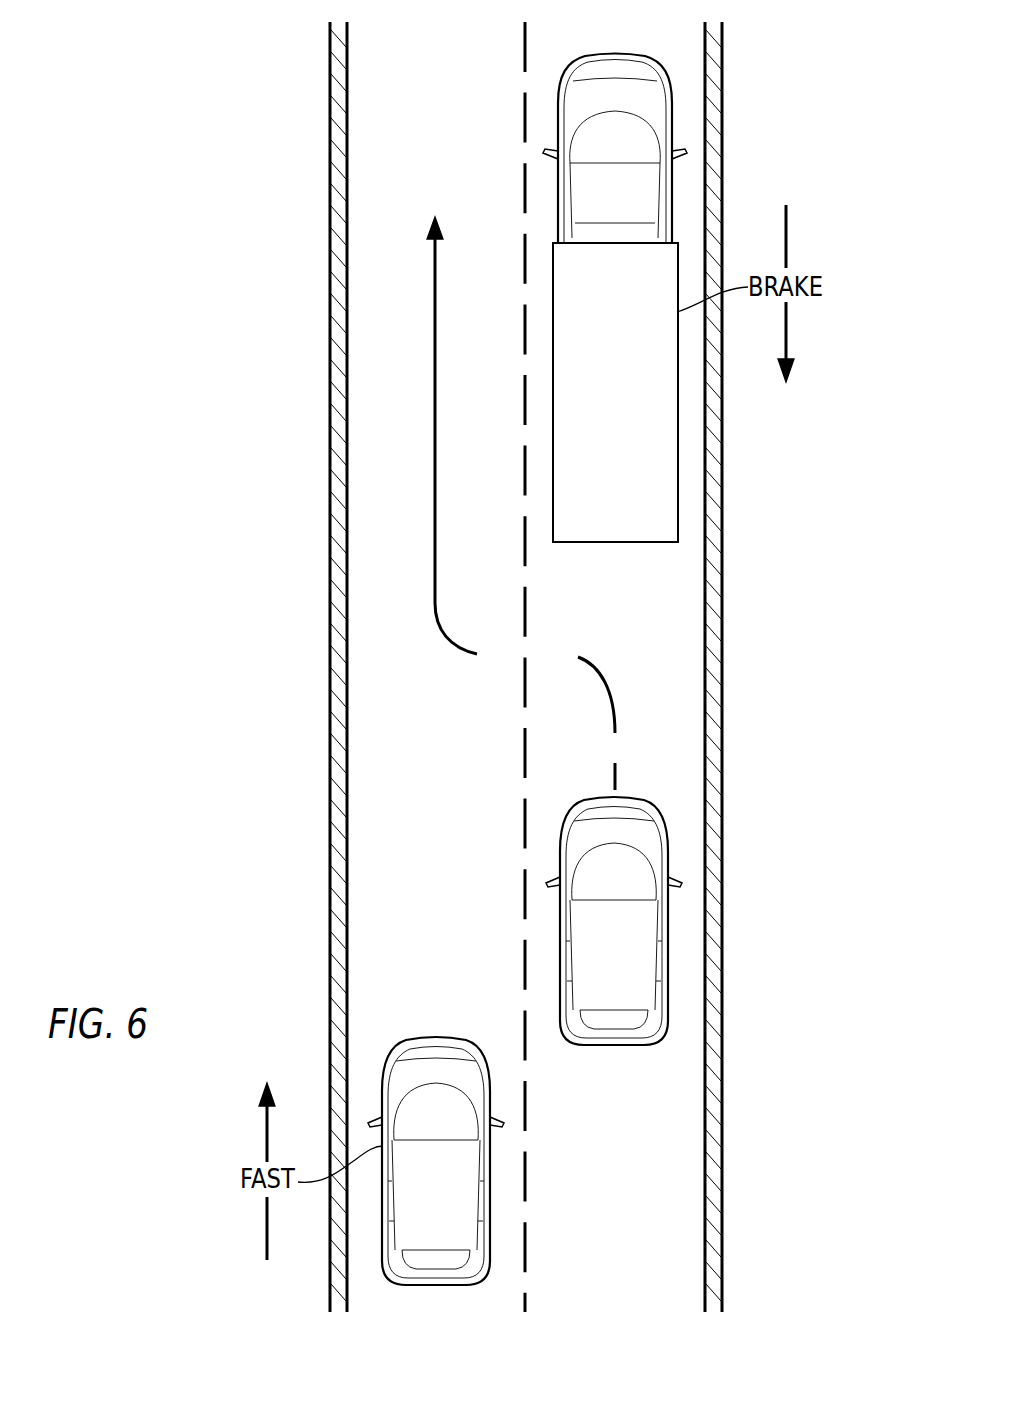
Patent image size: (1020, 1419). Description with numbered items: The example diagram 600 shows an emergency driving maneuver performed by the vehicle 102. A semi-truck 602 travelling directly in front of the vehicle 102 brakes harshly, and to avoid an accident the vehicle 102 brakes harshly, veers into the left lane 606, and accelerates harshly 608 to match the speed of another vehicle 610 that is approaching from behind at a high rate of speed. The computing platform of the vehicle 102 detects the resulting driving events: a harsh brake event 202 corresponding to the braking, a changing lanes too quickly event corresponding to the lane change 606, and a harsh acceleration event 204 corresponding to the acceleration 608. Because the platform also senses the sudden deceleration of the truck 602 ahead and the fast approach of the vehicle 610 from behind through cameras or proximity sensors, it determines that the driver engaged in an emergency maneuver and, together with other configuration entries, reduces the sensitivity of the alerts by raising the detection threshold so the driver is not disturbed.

The driving scenario 600 is at (102, 954).
The semi-truck 602 is at (622, 384).
The vehicle 102 is at (622, 959).
The vehicle approaching from behind 610 is at (440, 1208).
The harsh acceleration 608 is at (405, 387).
The lane change to left lane 606 is at (565, 645).
The harsh acceleration event 204 is at (360, 407).
The harsh brake event 202 is at (787, 773).